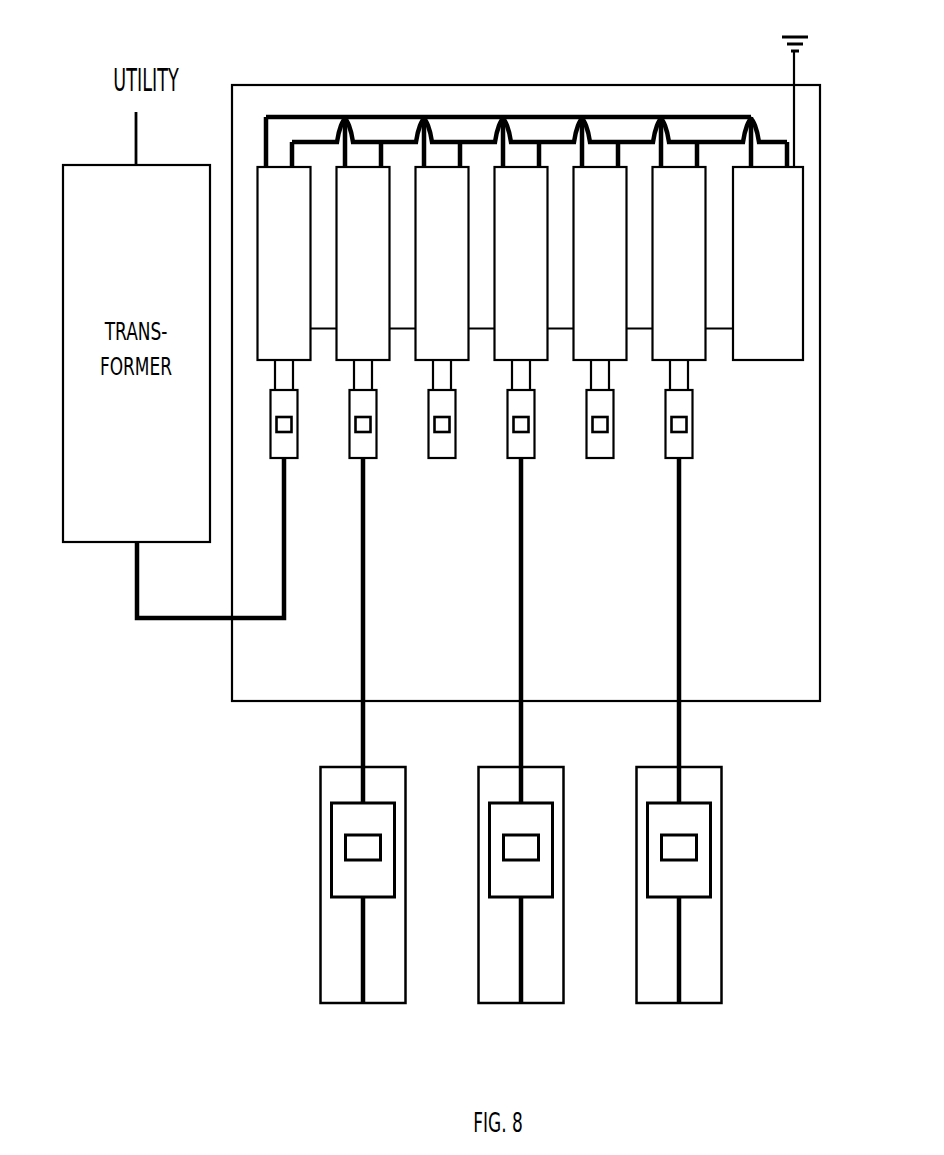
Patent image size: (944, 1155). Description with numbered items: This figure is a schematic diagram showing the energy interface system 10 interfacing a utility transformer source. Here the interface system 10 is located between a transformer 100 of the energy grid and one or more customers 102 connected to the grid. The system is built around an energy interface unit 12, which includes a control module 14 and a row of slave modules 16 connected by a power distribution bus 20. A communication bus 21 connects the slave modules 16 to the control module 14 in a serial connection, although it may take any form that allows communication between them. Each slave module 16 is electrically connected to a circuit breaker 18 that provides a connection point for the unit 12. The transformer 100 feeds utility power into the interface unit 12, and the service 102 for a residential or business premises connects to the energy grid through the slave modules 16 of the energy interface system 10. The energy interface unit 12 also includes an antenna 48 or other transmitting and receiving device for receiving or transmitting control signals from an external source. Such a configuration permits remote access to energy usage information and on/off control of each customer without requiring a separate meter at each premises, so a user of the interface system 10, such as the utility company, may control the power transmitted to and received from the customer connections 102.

The energy interface system 10 is at (292, 47).
The energy interface unit 12 is at (278, 702).
The control module 14 is at (768, 263).
The slave modules 16 is at (482, 263).
The circuit breaker 18 is at (290, 460).
The power distribution bus 20 is at (457, 142).
The communication bus 21 is at (318, 329).
The antenna 48 is at (793, 71).
The transformer 100 is at (118, 544).
The customers 102 is at (363, 1005).